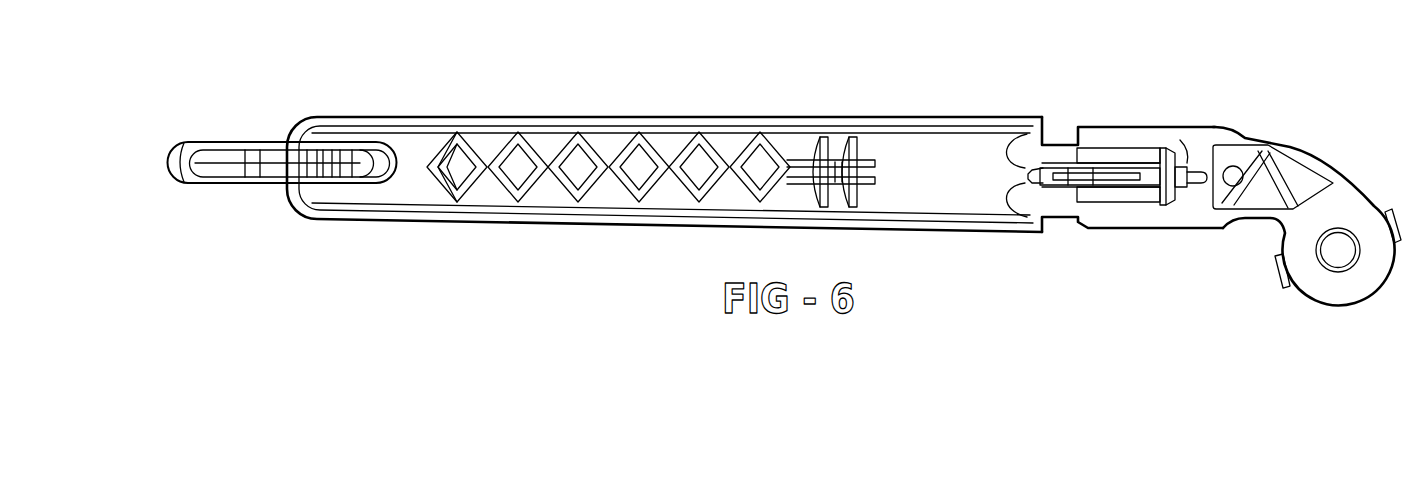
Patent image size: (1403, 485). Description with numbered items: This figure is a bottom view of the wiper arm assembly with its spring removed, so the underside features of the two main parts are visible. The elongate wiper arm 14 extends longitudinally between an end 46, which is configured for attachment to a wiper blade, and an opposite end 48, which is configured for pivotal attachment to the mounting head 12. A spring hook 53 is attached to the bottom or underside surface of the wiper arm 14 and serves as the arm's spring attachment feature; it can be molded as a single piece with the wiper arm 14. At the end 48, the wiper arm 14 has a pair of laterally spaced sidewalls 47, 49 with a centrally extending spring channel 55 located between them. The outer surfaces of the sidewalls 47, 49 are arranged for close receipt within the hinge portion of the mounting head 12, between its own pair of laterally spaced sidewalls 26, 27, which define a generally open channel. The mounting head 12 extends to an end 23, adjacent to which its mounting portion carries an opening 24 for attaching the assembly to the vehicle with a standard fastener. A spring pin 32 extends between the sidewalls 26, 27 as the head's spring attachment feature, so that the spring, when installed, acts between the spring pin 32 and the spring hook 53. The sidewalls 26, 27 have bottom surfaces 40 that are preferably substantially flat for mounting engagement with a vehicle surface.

The mounting head 12 is at (1357, 306).
The wiper arm 14 is at (636, 117).
The end 23 is at (1375, 288).
The opening 24 is at (1339, 256).
The sidewall 26 is at (1088, 228).
The sidewall 27 is at (1100, 127).
The spring pin 32 is at (1183, 167).
The bottom surfaces 40 is at (1107, 135).
The end 46 is at (212, 183).
The sidewall 47 is at (1128, 147).
The end 48 is at (1158, 203).
The sidewall 49 is at (1117, 203).
The spring hook 53 is at (838, 143).
The spring channel 55 is at (1072, 182).